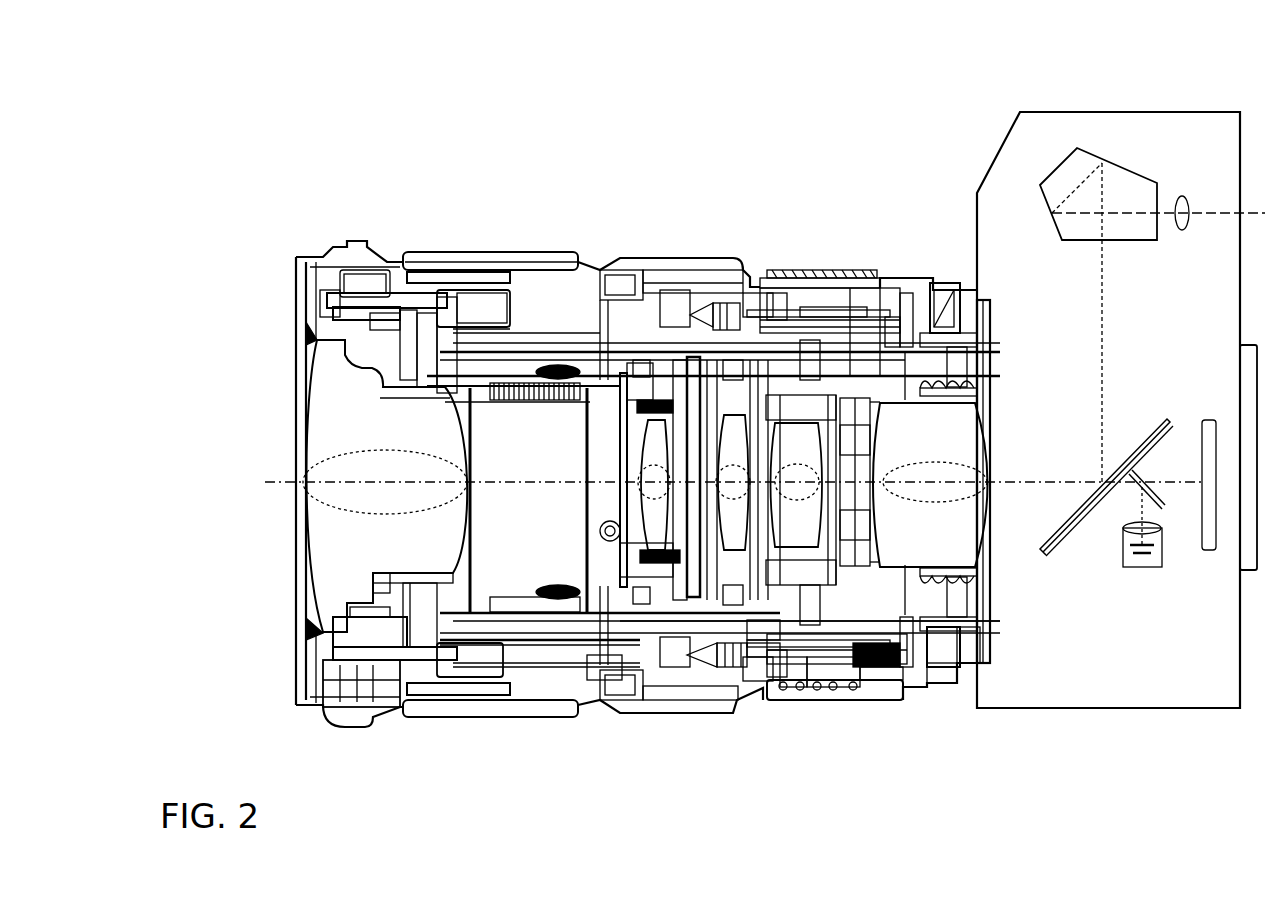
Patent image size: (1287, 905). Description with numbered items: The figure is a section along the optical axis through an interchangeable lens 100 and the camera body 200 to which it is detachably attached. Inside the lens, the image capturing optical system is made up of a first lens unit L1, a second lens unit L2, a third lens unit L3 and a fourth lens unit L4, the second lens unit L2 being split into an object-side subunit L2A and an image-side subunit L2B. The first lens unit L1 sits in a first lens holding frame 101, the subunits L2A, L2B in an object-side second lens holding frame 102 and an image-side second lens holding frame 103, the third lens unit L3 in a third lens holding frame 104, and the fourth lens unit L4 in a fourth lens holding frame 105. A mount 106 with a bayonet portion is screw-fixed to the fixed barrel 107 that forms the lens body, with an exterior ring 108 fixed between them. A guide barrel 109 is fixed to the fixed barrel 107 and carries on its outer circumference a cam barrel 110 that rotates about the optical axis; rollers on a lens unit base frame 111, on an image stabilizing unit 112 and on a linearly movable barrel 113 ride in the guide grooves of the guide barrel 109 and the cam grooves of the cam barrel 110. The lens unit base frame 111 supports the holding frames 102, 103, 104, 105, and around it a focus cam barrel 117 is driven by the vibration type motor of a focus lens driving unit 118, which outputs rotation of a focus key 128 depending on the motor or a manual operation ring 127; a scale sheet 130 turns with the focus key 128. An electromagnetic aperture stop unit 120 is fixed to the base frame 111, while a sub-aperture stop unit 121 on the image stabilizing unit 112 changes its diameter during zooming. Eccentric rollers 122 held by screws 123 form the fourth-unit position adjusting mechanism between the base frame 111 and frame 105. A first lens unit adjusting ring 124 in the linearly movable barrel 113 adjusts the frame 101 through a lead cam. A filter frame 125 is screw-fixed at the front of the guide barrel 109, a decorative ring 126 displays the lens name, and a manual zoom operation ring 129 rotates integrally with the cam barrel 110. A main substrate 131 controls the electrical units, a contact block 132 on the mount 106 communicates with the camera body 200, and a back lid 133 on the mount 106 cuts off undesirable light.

The interchangeable lens 100 is at (583, 200).
The camera body 200 is at (1030, 112).
The first lens holding frame 101 is at (358, 640).
The object-side second lens holding frame 102 is at (613, 705).
The image-side second lens holding frame 103 is at (748, 660).
The third lens holding frame 104 is at (803, 693).
The fourth lens holding frame 105 is at (877, 680).
The mount 106 is at (943, 310).
The fixed barrel 107 is at (708, 270).
The exterior ring 108 is at (912, 283).
The guide barrel 109 is at (867, 288).
The cam barrel 110 is at (762, 293).
The lens unit base frame 111 is at (820, 290).
The image stabilizing unit 112 is at (788, 353).
The linearly movable barrel 113 is at (433, 300).
The focus cam barrel 117 is at (778, 293).
The focus lens driving unit 118 is at (587, 290).
The electromagnetic aperture stop unit 120 is at (697, 367).
The sub-aperture stop unit 121 is at (778, 680).
The eccentric roller 122 is at (906, 293).
The screw 123 is at (906, 642).
The first lens unit adjusting ring 124 is at (400, 262).
The filter frame 125 is at (345, 252).
The decorative ring 126 is at (322, 262).
The manual operation ring 127 is at (477, 290).
The focus key 128 is at (480, 380).
The manual zoom operation ring 129 is at (847, 360).
The scale sheet 130 is at (625, 290).
The main substrate 131 is at (925, 670).
The contact block 132 is at (970, 633).
The back lid 133 is at (983, 640).
The first lens unit L1 is at (385, 481).
The second lens unit L2 is at (720, 752).
The object-side subunit L2A is at (655, 600).
The image-side subunit L2B is at (730, 605).
The third lens unit L3 is at (797, 485).
The fourth lens unit L4 is at (930, 485).